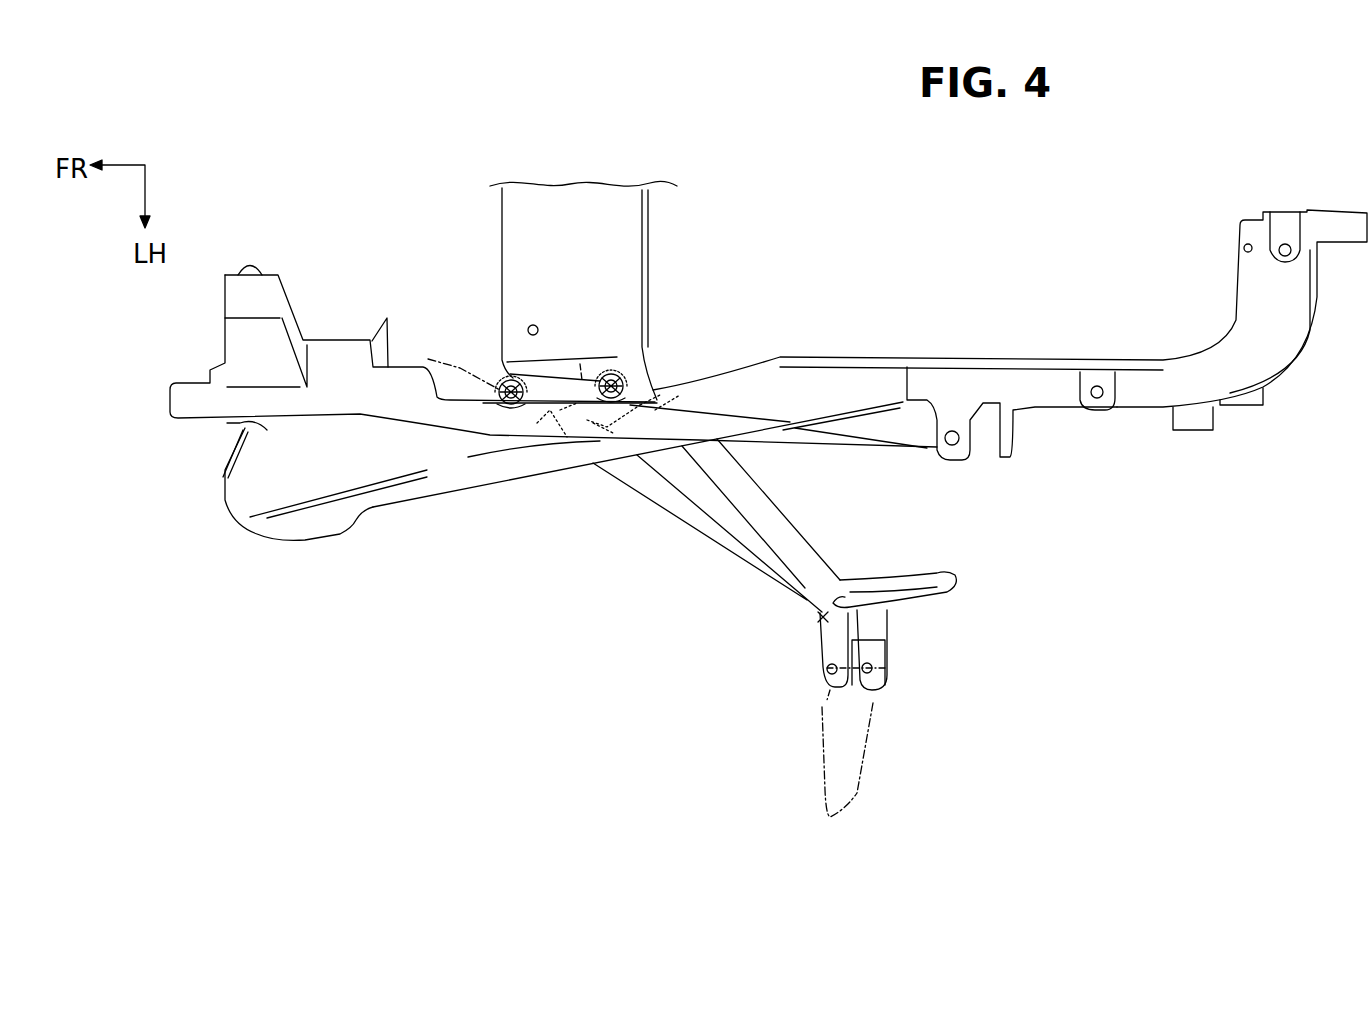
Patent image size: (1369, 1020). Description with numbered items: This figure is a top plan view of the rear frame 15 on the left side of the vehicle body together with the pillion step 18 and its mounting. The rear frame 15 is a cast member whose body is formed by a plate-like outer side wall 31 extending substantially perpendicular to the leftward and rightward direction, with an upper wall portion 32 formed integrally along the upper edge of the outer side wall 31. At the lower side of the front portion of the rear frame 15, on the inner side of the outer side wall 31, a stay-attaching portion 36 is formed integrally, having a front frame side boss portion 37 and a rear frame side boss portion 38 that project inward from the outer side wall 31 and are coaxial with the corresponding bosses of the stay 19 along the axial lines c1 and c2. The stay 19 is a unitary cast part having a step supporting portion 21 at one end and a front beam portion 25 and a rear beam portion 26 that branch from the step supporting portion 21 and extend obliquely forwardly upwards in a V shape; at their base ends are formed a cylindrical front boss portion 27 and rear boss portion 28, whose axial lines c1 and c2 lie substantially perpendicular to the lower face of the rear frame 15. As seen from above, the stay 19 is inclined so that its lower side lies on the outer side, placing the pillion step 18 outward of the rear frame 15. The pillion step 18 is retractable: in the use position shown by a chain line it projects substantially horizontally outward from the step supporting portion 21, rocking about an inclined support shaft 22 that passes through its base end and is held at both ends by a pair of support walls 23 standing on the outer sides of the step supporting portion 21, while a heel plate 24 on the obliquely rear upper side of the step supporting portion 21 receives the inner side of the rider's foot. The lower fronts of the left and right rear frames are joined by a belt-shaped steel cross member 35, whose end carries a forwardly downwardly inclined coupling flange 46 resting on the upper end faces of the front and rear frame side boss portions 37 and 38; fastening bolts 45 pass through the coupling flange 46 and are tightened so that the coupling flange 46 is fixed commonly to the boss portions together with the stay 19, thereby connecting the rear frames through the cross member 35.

The rear frame 15 is at (820, 353).
The pillion step 18 is at (863, 797).
The stay 19 is at (728, 557).
The step supporting portion 21 is at (820, 617).
The support shaft 22 is at (827, 690).
The support walls 23 is at (827, 657).
The heel plate 24 is at (943, 590).
The front beam portion 25 is at (687, 517).
The rear beam portion 26 is at (772, 507).
The front boss portion 27 is at (560, 428).
The rear boss portion 28 is at (658, 376).
The outer side wall 31 is at (870, 430).
The upper wall portion 32 is at (880, 380).
The cross member 35 is at (502, 218).
The stay-attaching portion 36 is at (580, 318).
The front frame side boss portion 37 is at (508, 380).
The rear frame side boss portion 38 is at (653, 373).
The fastening bolts 45 is at (600, 387).
The coupling flange 46 is at (578, 392).
The axial line c1 is at (443, 367).
The axial line c2 is at (580, 364).